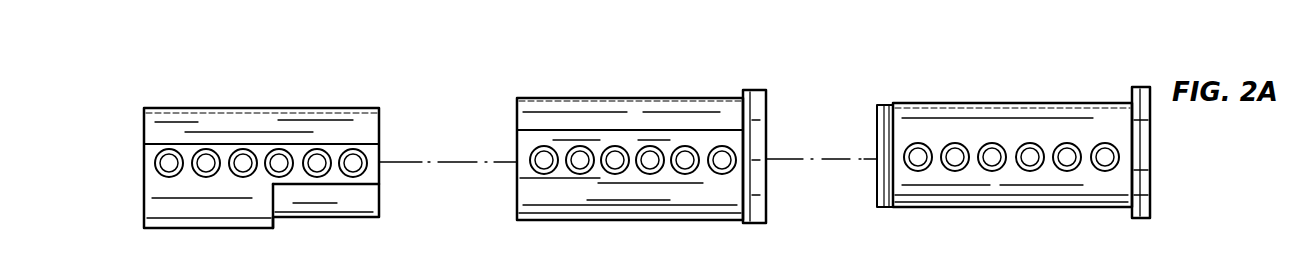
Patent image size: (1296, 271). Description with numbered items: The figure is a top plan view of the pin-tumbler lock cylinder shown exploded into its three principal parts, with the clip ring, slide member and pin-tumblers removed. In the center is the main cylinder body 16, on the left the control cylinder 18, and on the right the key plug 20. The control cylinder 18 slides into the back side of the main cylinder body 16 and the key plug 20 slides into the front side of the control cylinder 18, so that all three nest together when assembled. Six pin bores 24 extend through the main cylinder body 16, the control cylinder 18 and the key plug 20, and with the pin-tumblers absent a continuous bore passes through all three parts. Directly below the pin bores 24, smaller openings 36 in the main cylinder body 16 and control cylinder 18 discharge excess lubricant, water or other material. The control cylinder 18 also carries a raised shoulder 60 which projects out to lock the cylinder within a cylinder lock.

The main cylinder body 16 is at (580, 108).
The control cylinder 18 is at (357, 128).
The key plug 20 is at (1013, 67).
The pin bores 24 is at (318, 155).
The openings 36 is at (243, 158).
The raised shoulder 60 is at (252, 220).